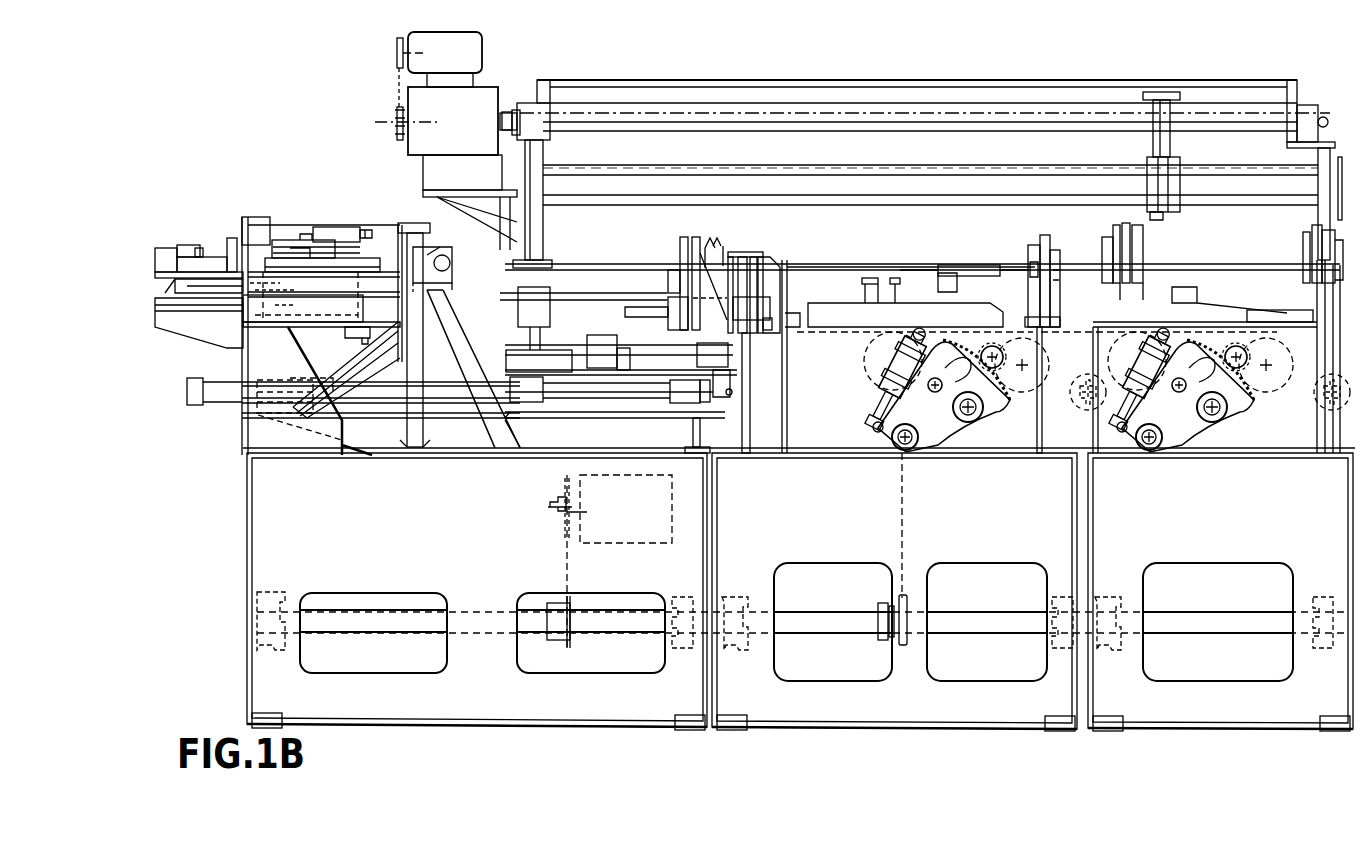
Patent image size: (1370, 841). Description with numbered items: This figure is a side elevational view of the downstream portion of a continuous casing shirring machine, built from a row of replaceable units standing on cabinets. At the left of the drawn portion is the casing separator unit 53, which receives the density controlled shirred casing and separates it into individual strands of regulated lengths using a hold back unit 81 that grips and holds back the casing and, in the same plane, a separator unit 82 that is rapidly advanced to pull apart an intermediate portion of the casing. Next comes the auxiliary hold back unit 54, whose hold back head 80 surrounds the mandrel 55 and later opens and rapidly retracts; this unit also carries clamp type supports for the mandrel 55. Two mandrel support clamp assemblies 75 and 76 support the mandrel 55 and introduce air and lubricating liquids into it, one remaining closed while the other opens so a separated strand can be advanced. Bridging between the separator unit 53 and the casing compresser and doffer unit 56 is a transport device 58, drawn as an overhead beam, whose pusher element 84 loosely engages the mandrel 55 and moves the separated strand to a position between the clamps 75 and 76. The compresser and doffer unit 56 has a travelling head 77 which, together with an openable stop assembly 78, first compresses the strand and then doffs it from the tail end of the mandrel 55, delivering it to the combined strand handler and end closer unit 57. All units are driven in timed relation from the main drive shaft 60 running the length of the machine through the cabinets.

The casing separator unit 53 is at (1205, 738).
The auxiliary hold back unit 54 is at (922, 738).
The mandrel 55 is at (859, 263).
The casing compresser and doffer unit 56 is at (796, 614).
The combined strand handler and end closer unit 57 is at (286, 213).
The transport device 58 is at (921, 145).
The main drive shaft 60 is at (358, 625).
The mandrel support clamp assembly 75 is at (1041, 240).
The mandrel support clamp assembly 76 is at (756, 245).
The travelling head 77 is at (664, 243).
The openable stop assembly 78 is at (462, 230).
The hold back head 80 is at (962, 263).
The hold back unit 81 is at (1288, 258).
The separator unit 82 is at (1163, 277).
The pusher element 84 is at (1152, 219).